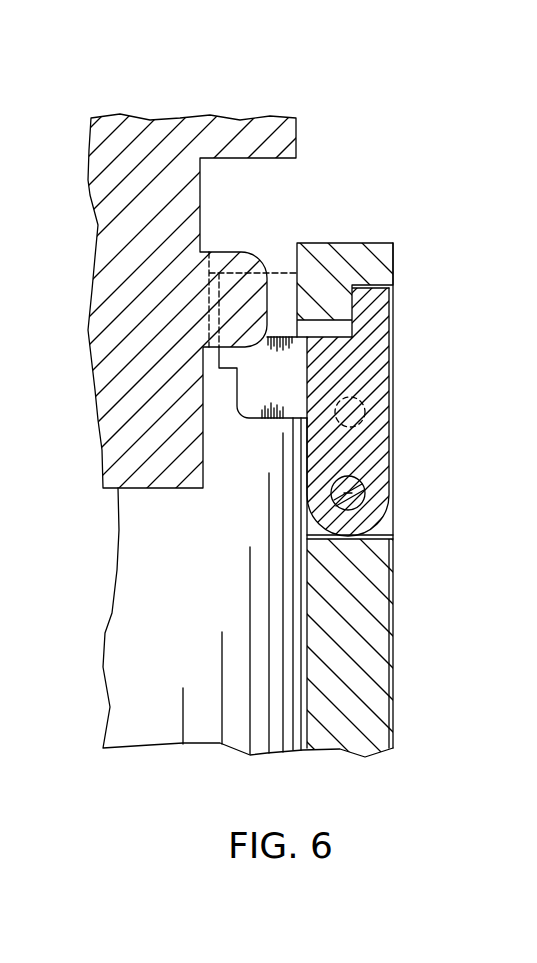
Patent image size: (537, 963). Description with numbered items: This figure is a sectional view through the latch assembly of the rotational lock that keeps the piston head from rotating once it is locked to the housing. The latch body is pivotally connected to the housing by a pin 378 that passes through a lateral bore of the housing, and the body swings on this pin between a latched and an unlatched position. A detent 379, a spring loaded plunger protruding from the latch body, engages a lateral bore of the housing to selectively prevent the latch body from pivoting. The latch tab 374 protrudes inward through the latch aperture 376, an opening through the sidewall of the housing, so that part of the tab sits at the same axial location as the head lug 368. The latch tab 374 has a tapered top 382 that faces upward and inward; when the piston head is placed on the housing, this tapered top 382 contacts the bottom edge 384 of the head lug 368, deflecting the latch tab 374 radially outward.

The head lug 368 is at (227, 258).
The tapered top 382 is at (250, 364).
The bottom edge 384 is at (225, 349).
The latch tab 374 is at (373, 325).
The detent 379 is at (366, 401).
The pin 378 is at (368, 482).
The latch aperture 376 is at (382, 527).